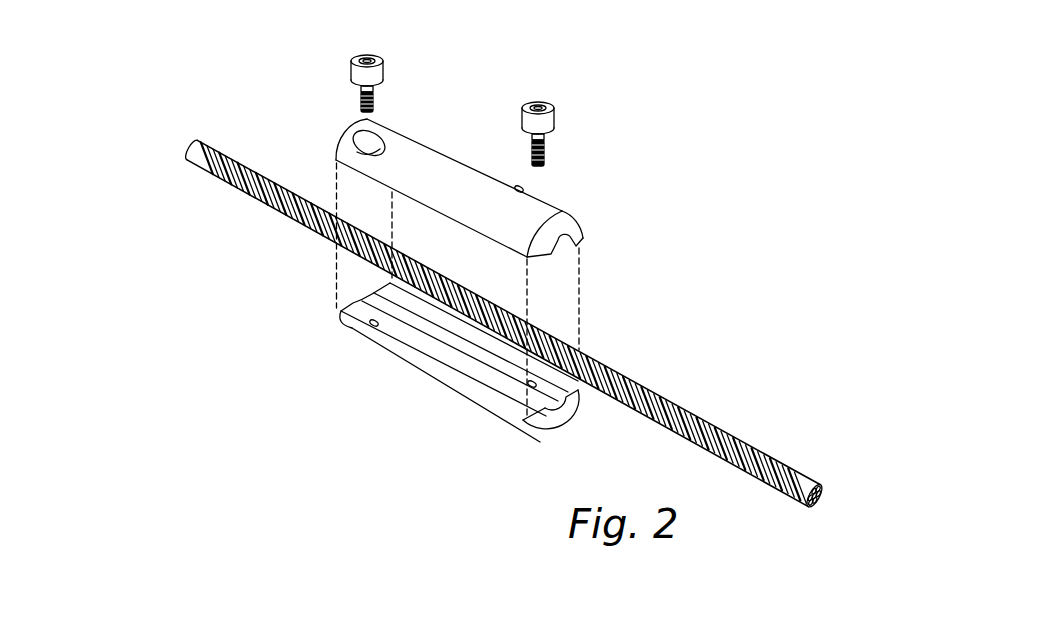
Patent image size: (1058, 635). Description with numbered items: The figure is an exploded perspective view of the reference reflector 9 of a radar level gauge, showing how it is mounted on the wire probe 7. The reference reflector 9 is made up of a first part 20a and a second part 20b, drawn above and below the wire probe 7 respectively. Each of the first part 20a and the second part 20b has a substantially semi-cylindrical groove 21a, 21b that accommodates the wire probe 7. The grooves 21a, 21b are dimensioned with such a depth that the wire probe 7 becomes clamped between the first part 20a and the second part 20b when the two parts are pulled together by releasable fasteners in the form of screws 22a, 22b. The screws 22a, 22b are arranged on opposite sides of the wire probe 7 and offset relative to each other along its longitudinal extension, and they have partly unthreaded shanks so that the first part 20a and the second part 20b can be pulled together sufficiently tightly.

The wire probe 7 is at (703, 430).
The reference reflector 9 is at (634, 139).
The first part 20a is at (462, 174).
The second part 20b is at (433, 380).
The semi-cylindrical groove 21a is at (578, 250).
The semi-cylindrical groove 21b is at (590, 378).
The screw 22a is at (384, 72).
The screw 22b is at (549, 103).